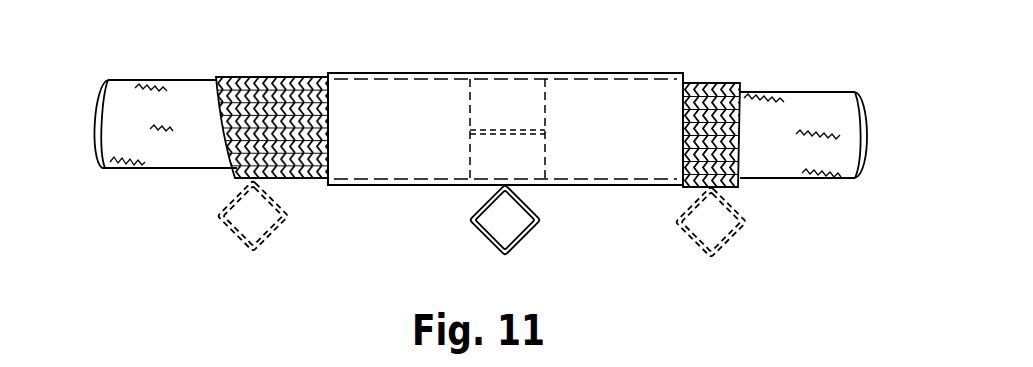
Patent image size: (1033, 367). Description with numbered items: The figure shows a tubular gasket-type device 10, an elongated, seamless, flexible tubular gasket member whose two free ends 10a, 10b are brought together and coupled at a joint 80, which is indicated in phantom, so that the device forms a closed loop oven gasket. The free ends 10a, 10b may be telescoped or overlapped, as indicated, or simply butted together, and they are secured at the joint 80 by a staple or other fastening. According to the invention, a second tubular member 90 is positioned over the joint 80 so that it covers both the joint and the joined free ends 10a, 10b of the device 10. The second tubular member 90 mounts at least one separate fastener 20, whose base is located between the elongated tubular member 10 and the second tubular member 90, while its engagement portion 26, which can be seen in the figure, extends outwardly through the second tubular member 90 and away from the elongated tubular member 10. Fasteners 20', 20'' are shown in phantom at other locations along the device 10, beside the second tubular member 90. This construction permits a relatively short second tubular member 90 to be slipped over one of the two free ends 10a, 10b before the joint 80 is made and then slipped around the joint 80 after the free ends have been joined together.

The tubular gasket-type device 10 is at (713, 79).
The free end 10a is at (551, 100).
The free end 10b is at (470, 117).
The joint 80 is at (519, 131).
The second tubular member 90 is at (628, 70).
The fastener 20 is at (541, 229).
The engagement portion 26 is at (483, 238).
The clamp in alternative position 20' is at (208, 222).
The clamp in alternative position 20'' is at (695, 242).